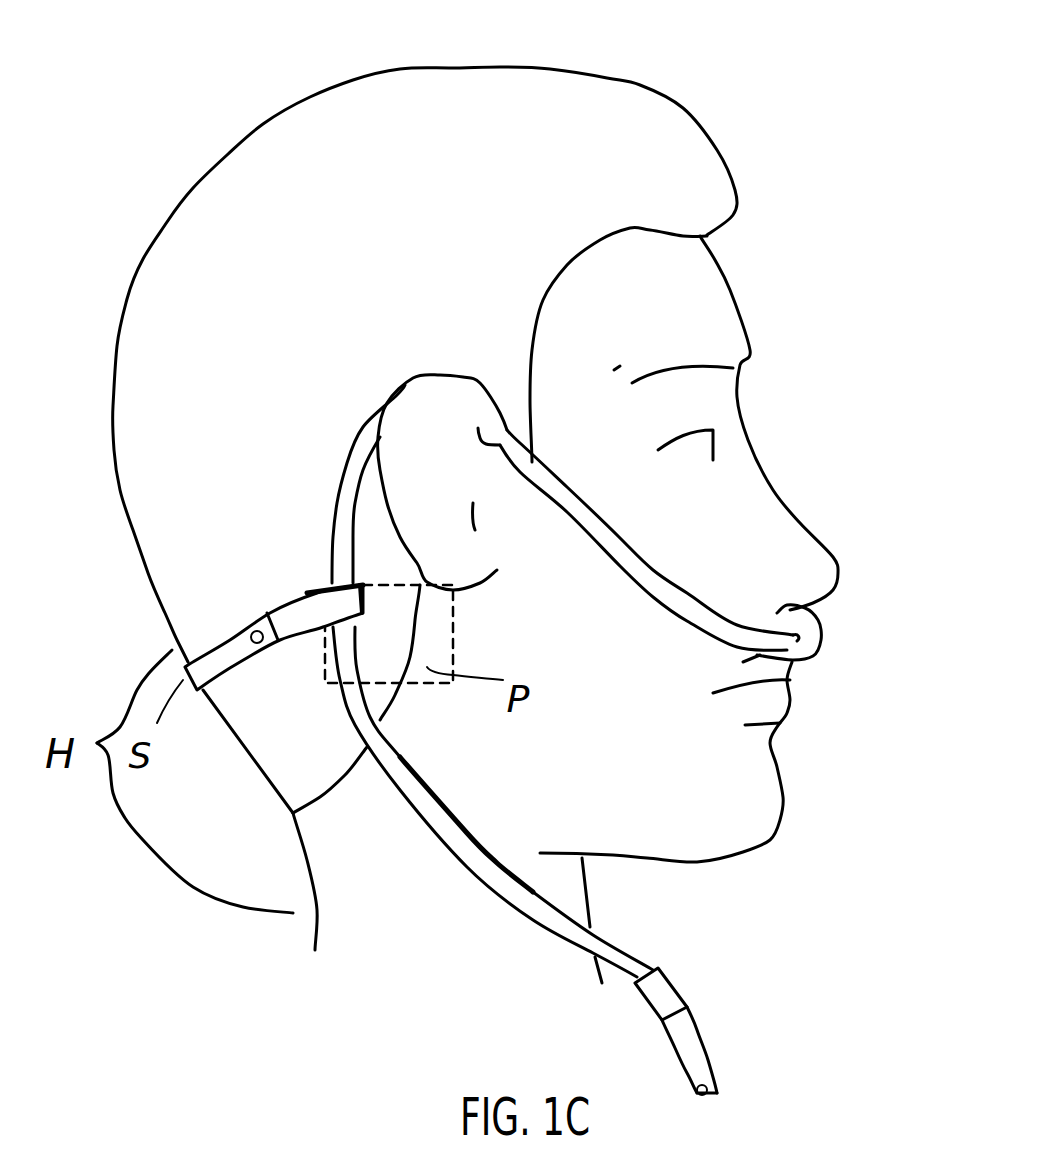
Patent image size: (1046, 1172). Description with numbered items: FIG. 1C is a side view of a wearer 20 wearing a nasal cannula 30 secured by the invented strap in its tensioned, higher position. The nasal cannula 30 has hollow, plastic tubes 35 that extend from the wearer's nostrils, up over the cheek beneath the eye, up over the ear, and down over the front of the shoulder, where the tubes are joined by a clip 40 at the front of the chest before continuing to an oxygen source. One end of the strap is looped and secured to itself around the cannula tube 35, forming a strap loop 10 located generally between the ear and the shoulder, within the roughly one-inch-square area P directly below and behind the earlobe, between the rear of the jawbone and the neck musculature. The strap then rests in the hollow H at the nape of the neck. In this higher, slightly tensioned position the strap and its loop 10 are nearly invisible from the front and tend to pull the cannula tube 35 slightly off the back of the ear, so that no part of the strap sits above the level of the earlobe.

The strap loop 10 is at (367, 590).
The wearer 20 is at (619, 66).
The nasal cannula 30 is at (820, 662).
The cannula tube 35 is at (527, 915).
The clip 40 is at (673, 987).